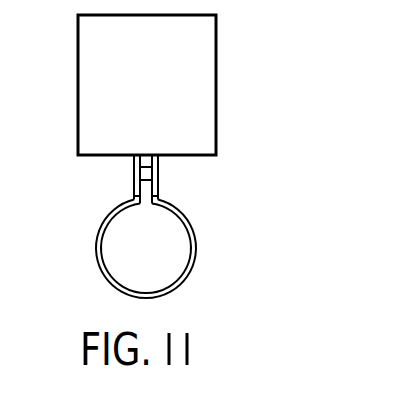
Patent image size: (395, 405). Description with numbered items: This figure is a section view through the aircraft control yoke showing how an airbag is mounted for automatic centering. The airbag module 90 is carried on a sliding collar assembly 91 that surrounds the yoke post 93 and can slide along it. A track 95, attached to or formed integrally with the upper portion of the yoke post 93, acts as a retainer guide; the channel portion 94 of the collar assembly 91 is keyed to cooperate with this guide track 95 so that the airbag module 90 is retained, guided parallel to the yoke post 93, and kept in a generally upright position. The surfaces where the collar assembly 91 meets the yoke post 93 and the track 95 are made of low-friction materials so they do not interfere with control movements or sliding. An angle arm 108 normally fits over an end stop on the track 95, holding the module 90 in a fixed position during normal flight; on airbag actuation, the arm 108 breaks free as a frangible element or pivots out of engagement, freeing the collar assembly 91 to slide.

The airbag module 90 is at (167, 82).
The collar assembly 91 is at (133, 177).
The yoke post 93 is at (153, 258).
The channel portion 94 is at (160, 172).
The track 95 is at (133, 195).
The angle arm 108 is at (151, 168).